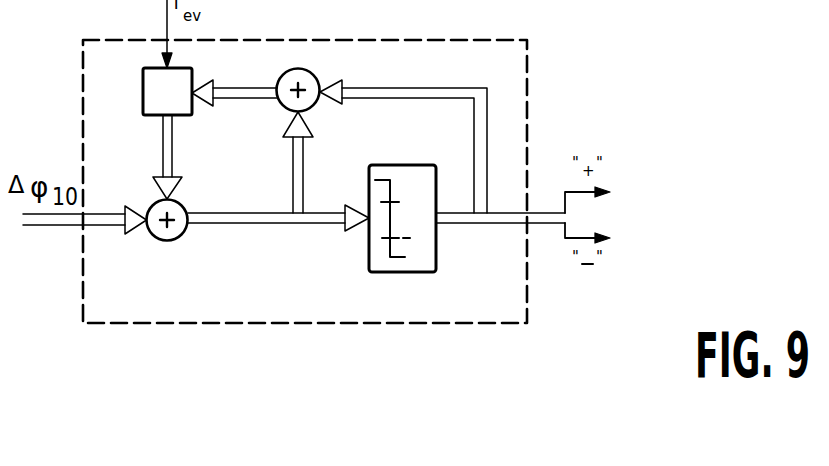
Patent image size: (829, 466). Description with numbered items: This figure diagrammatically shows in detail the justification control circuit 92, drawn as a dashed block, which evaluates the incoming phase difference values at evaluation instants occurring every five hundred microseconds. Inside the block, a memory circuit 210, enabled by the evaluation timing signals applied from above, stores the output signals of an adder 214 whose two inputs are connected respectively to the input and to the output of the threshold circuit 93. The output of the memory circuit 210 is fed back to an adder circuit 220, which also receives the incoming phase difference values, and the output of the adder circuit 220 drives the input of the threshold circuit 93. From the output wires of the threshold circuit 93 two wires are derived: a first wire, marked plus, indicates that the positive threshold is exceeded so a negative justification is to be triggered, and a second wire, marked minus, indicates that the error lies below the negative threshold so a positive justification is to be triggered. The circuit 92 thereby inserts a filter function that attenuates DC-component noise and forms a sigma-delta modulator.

The justification control circuit 92 is at (290, 323).
The threshold circuit 93 is at (436, 247).
The memory circuit 210 is at (143, 96).
The adder 214 is at (283, 105).
The adder circuit 220 is at (174, 240).